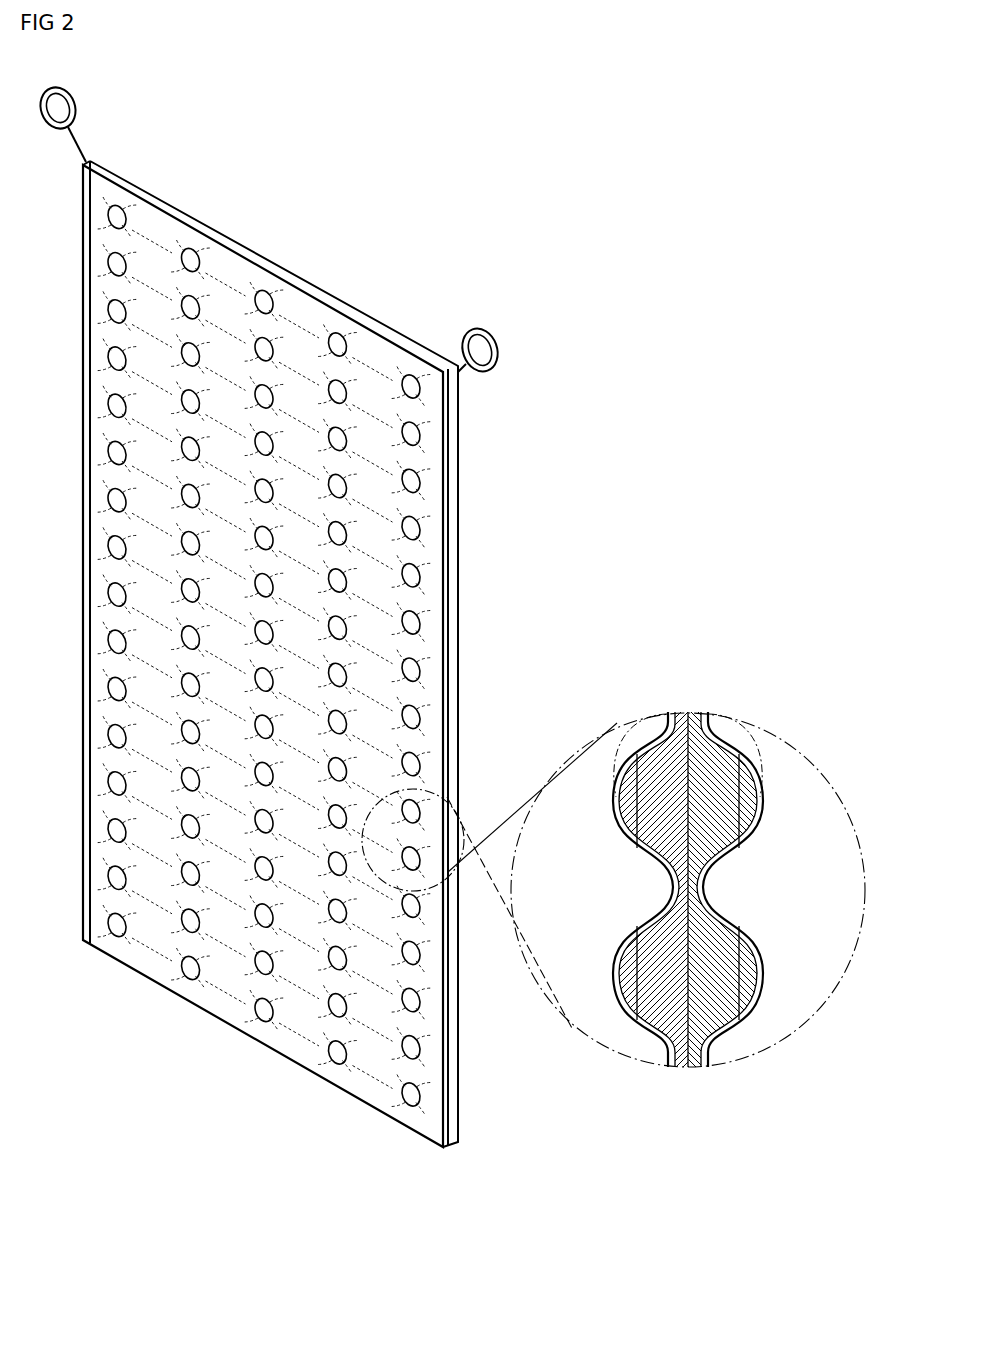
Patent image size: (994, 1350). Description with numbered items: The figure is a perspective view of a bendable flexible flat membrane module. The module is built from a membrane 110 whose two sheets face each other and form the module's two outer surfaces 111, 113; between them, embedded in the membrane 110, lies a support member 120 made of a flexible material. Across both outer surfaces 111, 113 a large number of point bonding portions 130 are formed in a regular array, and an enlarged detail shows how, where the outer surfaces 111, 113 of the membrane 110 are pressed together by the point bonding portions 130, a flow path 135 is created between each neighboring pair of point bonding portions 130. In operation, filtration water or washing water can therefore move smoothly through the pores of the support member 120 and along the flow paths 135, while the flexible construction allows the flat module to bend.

The membrane 110 is at (305, 317).
The first outer surface 111 is at (630, 720).
The second outer surface 113 is at (760, 727).
The support member 120 is at (636, 970).
The point bonding portion 130 is at (342, 340).
The flow path 135 is at (748, 803).